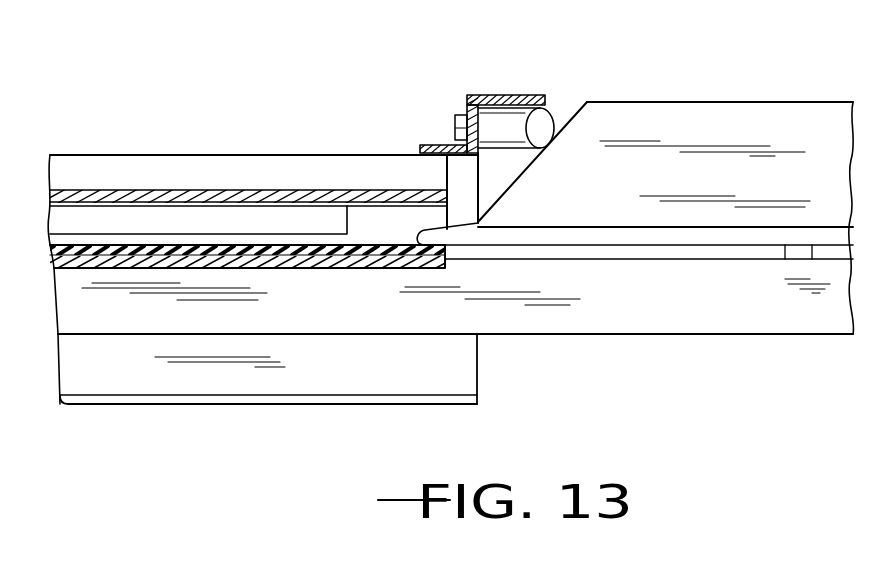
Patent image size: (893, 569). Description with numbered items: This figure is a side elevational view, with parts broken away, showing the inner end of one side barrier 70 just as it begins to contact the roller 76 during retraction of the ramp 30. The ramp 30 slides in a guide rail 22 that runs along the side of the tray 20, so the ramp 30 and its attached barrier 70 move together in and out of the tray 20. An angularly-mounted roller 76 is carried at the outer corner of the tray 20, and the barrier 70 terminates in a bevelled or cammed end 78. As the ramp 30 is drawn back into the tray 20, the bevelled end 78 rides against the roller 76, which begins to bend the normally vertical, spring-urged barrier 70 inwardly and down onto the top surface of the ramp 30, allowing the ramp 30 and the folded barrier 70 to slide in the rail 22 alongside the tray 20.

The tray 20 is at (202, 156).
The guide rail 22 is at (334, 190).
The ramp 30 is at (650, 269).
The side barrier 70 is at (699, 128).
The roller 76 is at (523, 120).
The bevelled end 78 is at (514, 184).